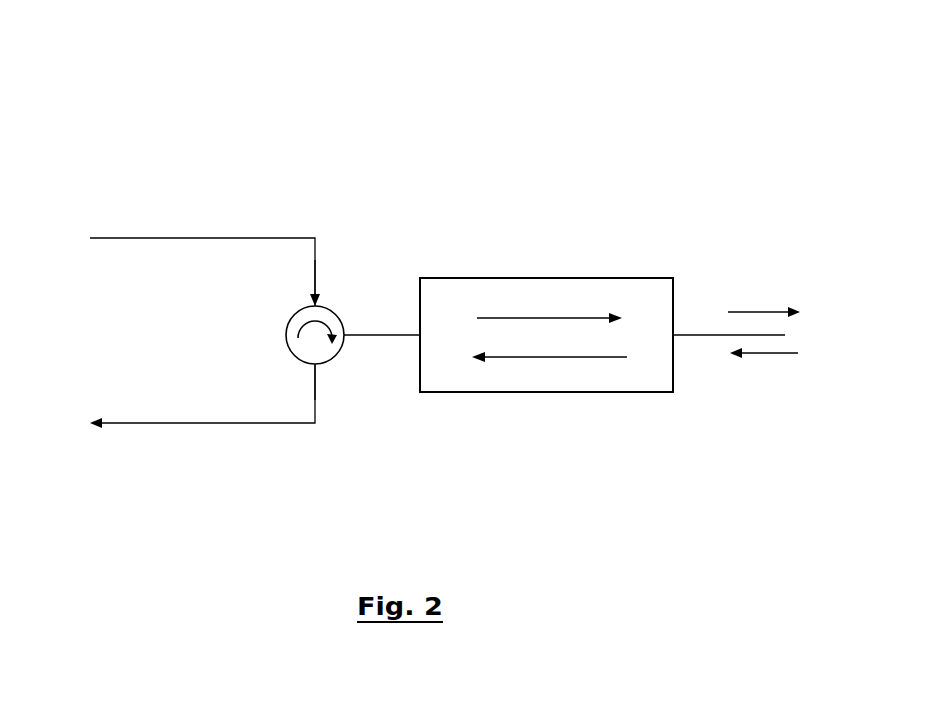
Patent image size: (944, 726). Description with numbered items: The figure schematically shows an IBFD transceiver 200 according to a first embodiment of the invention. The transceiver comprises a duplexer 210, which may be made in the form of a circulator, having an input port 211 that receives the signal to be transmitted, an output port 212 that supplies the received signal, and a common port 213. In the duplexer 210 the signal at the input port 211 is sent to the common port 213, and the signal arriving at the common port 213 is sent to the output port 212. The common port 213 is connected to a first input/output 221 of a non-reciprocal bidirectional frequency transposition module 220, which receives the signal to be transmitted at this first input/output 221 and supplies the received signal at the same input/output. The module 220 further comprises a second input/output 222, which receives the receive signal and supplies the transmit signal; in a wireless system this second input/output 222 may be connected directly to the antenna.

The IBFD transceiver 200 is at (298, 85).
The duplexer 210 is at (335, 312).
The input port 211 is at (313, 302).
The output port 212 is at (315, 364).
The common port 213 is at (345, 334).
The non-reciprocal bidirectional frequency transposition module 220 is at (512, 277).
The first input/output 221 is at (420, 337).
The second input/output 222 is at (673, 337).